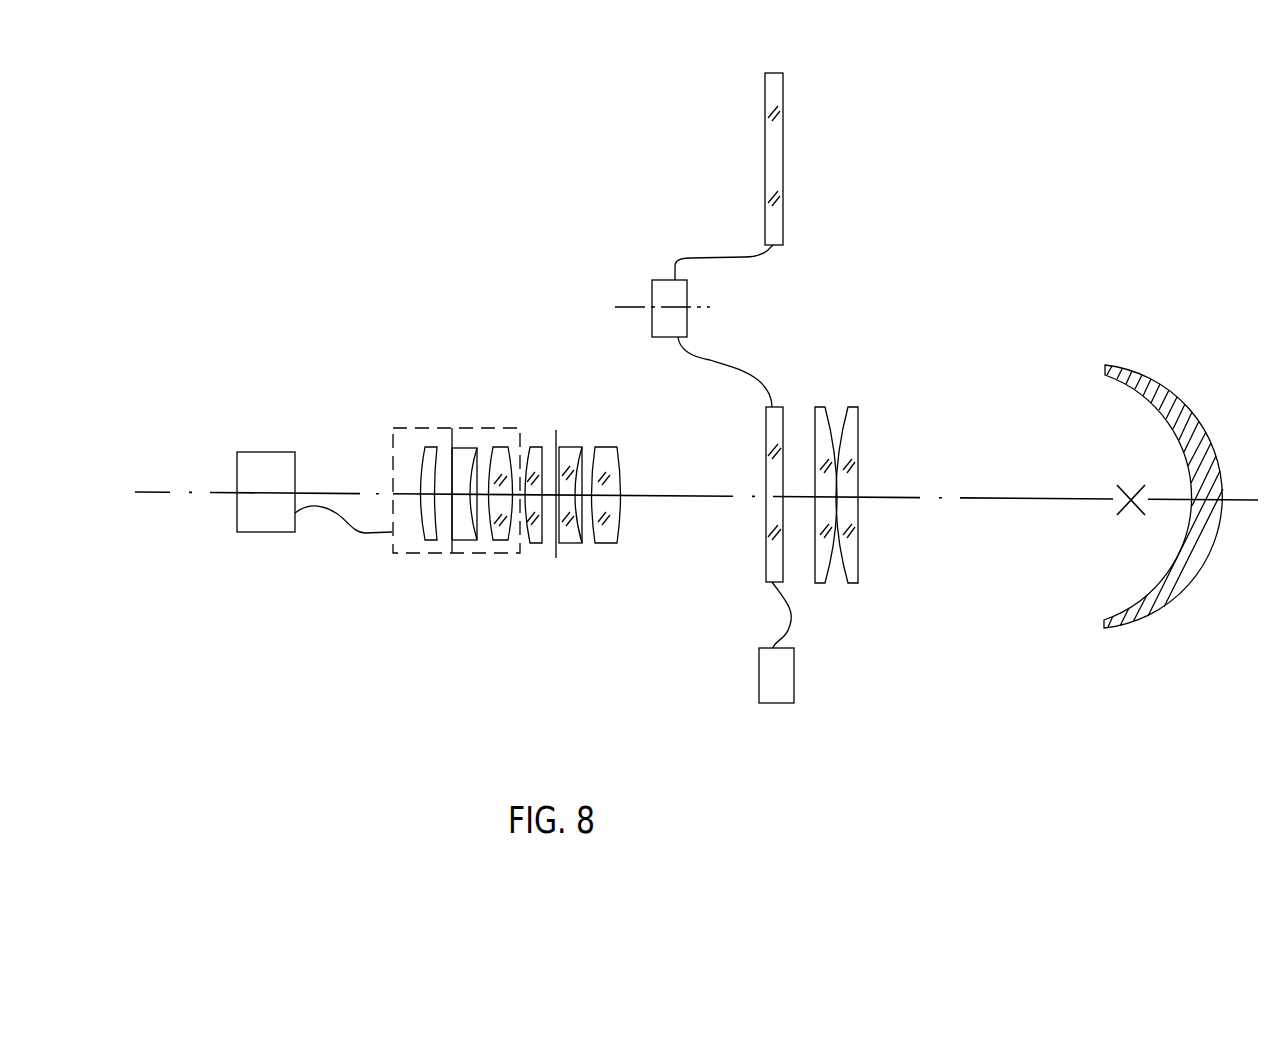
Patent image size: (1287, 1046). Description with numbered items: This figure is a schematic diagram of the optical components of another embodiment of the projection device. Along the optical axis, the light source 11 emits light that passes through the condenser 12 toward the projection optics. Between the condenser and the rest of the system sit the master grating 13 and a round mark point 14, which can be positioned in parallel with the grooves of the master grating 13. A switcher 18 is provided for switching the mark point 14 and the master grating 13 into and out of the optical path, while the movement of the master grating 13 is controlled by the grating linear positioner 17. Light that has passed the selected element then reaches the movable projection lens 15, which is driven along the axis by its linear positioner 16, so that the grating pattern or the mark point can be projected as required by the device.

The light source 11 is at (1248, 245).
The condenser 12 is at (1190, 415).
The master grating 13 is at (775, 412).
The mark point 14 is at (766, 226).
The movable projection lens 15 is at (410, 447).
The linear positioner 16 is at (260, 452).
The grating linear positioner 17 is at (793, 707).
The switcher 18 is at (658, 287).